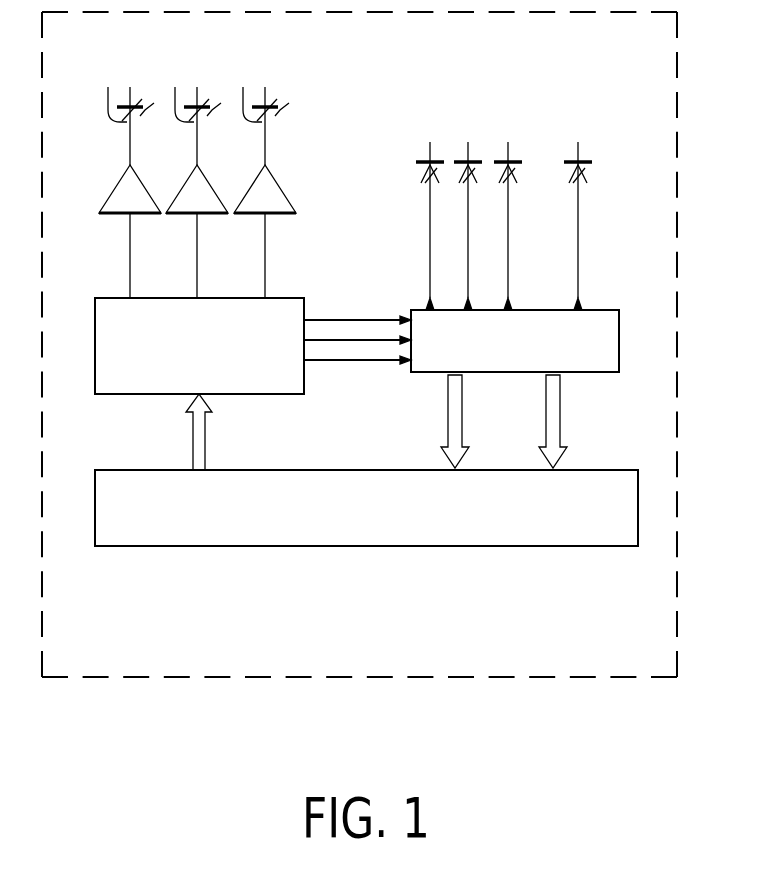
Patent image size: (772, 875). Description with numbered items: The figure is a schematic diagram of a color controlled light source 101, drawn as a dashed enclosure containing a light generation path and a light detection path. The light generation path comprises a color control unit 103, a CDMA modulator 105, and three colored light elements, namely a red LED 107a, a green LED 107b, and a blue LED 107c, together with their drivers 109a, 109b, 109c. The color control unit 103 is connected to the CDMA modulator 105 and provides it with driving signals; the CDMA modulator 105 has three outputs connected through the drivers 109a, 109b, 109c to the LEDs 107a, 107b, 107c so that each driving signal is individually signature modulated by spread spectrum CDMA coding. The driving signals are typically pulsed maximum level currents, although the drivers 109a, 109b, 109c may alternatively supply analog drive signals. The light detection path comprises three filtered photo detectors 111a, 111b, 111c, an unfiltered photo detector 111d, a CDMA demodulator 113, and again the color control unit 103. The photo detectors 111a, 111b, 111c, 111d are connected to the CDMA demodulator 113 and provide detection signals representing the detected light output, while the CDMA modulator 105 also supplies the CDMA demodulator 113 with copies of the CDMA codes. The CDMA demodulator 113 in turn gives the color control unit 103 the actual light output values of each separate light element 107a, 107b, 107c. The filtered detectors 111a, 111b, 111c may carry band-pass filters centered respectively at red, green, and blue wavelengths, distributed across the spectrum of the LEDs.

The color controlled light source 101 is at (133, 679).
The color control unit 103 is at (395, 542).
The CDMA modulator 105 is at (290, 306).
The red LED 107a is at (108, 93).
The green LED 107b is at (174, 93).
The blue LED 107c is at (243, 93).
The driver 109a is at (143, 182).
The driver 109b is at (209, 182).
The driver 109c is at (276, 182).
The filtered photo detector 111a is at (415, 175).
The filtered photo detector 111b is at (455, 160).
The filtered photo detector 111c is at (521, 160).
The unfiltered photo detector 111d is at (584, 172).
The CDMA demodulator 113 is at (608, 318).